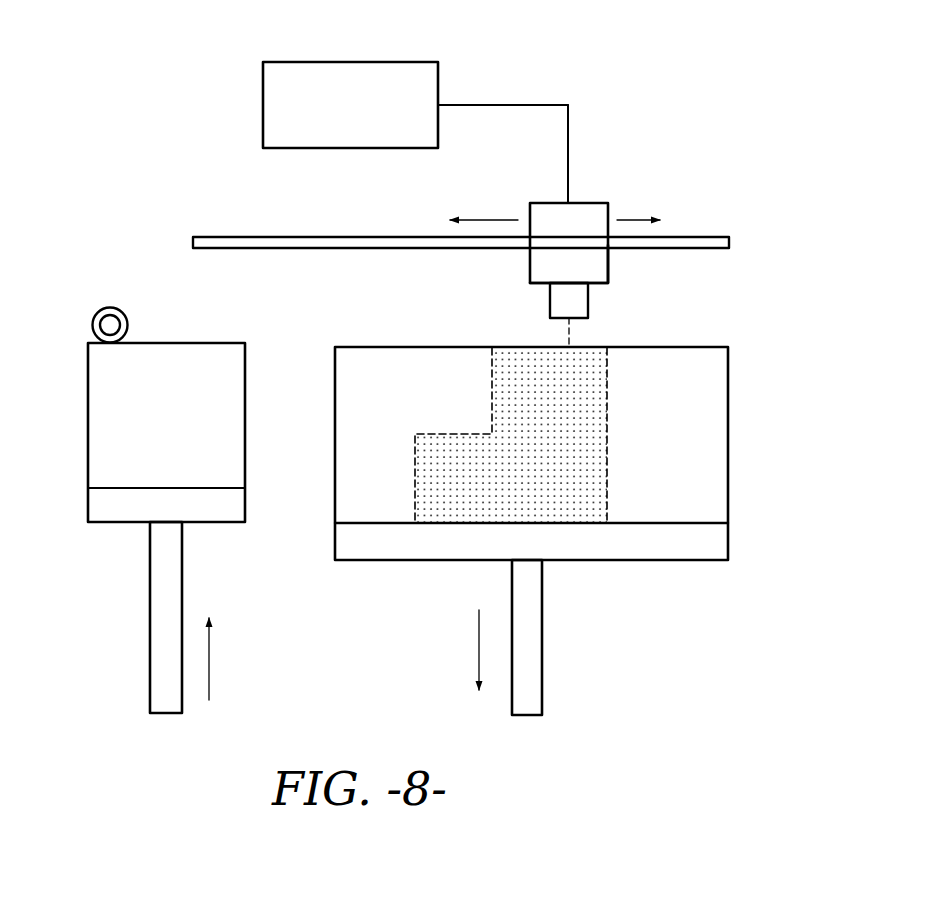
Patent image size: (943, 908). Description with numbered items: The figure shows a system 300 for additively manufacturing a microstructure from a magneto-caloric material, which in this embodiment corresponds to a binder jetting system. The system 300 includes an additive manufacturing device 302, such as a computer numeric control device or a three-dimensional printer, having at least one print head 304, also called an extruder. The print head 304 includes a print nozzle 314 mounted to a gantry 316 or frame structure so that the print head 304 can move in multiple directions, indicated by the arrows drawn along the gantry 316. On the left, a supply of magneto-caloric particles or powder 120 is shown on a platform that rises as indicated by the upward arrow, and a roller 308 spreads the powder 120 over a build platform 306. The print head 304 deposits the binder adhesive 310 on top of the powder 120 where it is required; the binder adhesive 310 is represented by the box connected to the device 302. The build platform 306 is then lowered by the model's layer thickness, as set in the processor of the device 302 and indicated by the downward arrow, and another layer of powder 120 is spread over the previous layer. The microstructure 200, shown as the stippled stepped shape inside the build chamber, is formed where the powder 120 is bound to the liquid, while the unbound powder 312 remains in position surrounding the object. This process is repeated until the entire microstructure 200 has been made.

The system 300 is at (688, 100).
The binder adhesive 310 is at (375, 118).
The additive manufacturing device 302 is at (614, 210).
The print head 304 is at (609, 262).
The print nozzle 314 is at (589, 298).
The gantry 316 is at (262, 236).
The roller 308 is at (87, 321).
The magneto-caloric particles/powder 120 is at (189, 433).
The unbound powder 312 is at (735, 403).
The build platform 306 is at (735, 540).
The microstructure 200 is at (514, 388).